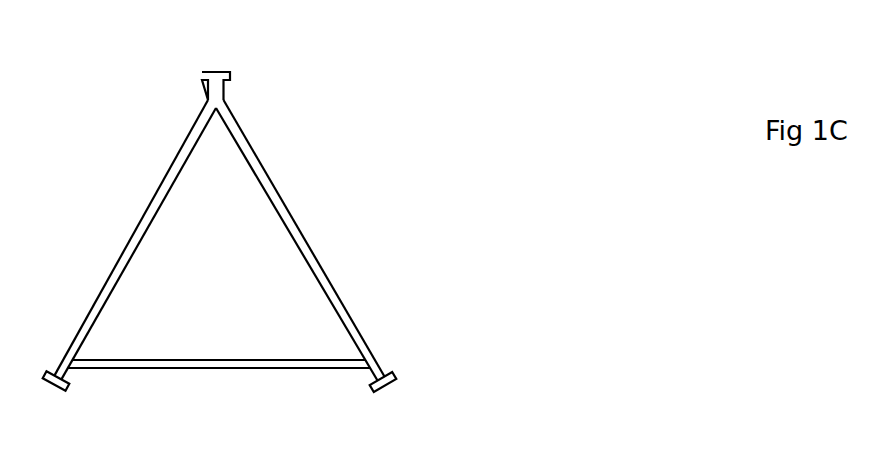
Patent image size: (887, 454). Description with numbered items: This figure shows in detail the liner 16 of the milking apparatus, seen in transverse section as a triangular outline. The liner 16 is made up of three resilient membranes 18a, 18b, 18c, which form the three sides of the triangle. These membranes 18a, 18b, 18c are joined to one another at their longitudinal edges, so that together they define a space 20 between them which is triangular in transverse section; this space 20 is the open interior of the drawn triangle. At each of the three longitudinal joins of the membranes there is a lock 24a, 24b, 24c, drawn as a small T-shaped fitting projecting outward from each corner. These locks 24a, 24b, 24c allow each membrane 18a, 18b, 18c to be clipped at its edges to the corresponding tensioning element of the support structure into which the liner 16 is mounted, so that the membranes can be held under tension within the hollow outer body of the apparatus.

The liner 16 is at (376, 89).
The resilient membrane 18a is at (283, 198).
The resilient membrane 18b is at (193, 368).
The resilient membrane 18c is at (150, 208).
The space 20 is at (290, 325).
The lock 24a is at (216, 63).
The lock 24b is at (397, 383).
The lock 24c is at (45, 388).